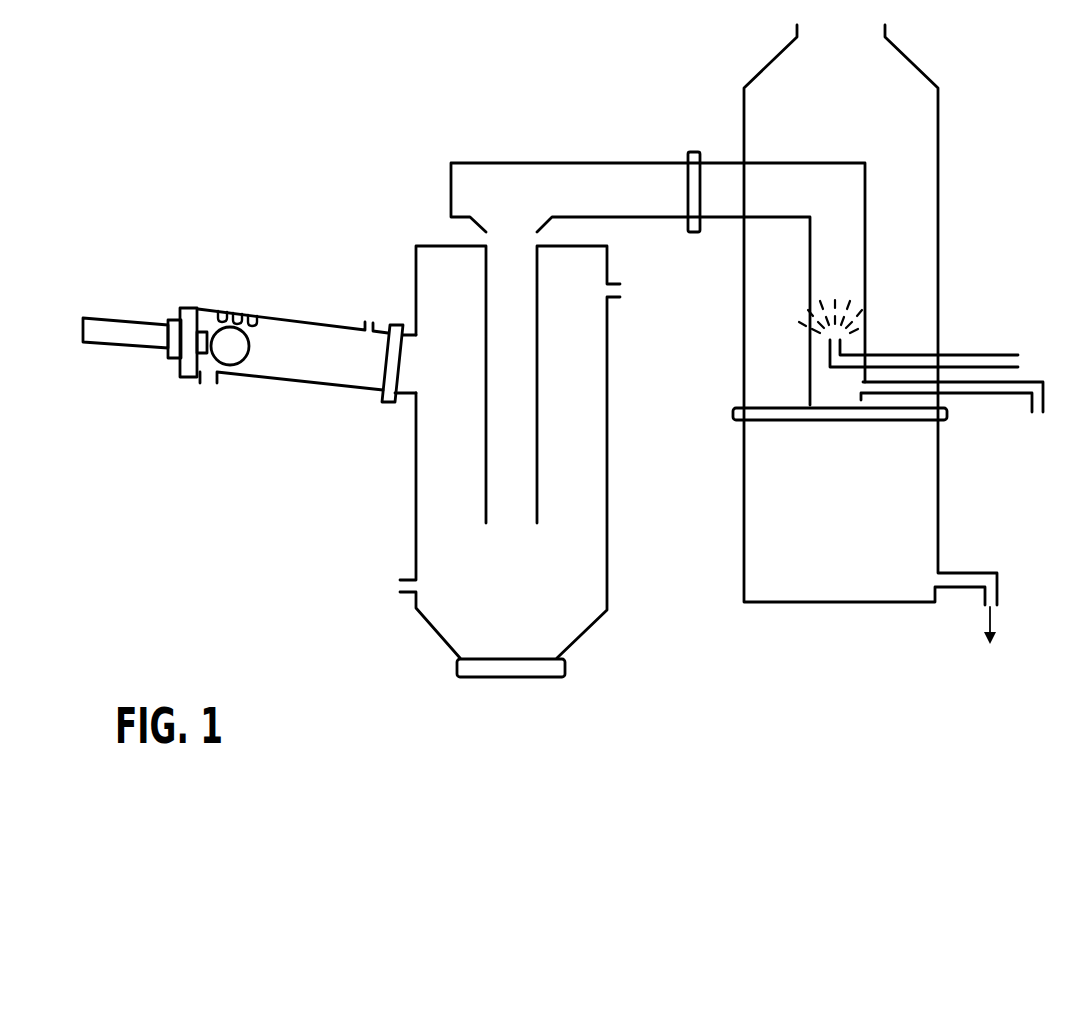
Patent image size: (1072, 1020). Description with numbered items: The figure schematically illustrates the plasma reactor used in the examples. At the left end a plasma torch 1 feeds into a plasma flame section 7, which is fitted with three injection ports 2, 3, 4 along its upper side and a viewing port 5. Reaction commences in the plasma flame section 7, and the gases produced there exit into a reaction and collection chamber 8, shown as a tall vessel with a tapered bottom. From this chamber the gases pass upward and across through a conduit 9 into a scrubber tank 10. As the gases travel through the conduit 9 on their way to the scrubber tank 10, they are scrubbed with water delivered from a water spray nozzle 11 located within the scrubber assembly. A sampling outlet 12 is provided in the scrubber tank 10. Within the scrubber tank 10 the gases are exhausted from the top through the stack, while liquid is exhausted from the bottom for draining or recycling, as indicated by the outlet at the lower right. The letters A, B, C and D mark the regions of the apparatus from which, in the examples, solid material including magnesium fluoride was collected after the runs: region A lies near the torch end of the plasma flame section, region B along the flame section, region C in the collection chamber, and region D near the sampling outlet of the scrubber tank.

The plasma torch 1 is at (125, 320).
The injection port 2 is at (218, 308).
The injection port 3 is at (237, 309).
The injection port 4 is at (256, 311).
The viewing port 5 is at (223, 337).
The plasma flame section 7 is at (267, 345).
The reaction and collection chamber 8 is at (440, 489).
The conduit 9 is at (542, 178).
The scrubber tank 10 is at (912, 527).
The water spray nozzle 11 is at (853, 308).
The sampling outlet 12 is at (985, 395).
The region A is at (196, 365).
The region B is at (309, 362).
The region C is at (577, 267).
The region D is at (1037, 430).